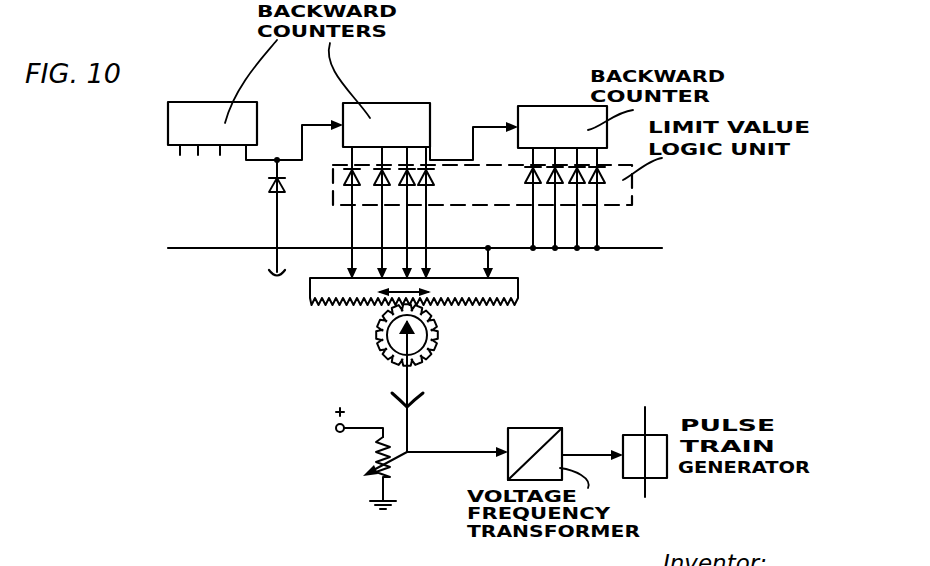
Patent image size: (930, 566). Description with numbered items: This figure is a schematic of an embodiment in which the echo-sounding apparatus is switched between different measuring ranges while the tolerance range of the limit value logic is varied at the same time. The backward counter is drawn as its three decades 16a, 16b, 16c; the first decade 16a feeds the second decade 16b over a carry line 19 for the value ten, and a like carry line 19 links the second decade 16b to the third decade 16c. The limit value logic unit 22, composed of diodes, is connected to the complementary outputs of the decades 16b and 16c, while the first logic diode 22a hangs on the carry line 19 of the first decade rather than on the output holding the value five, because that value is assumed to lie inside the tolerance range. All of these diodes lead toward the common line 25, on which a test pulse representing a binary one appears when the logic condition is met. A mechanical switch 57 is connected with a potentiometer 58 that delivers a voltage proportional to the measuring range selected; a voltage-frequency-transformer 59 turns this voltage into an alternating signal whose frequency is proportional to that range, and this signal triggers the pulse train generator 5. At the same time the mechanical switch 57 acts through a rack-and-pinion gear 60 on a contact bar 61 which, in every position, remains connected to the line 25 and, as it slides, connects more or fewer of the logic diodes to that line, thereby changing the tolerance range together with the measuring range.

The pulse train generator 5 is at (657, 458).
The decade of backward counter 16a is at (172, 128).
The decade of backward counter 16b is at (385, 118).
The decade of backward counter 16c is at (540, 120).
The carry line 19 is at (302, 140).
The limit value logic unit 22 is at (633, 187).
The diode 22a is at (272, 190).
The line 25 is at (642, 253).
The mechanical switch 57 is at (433, 342).
The potentiometer 58 is at (398, 463).
The voltage-frequency-transformer 59 is at (538, 428).
The rack-and-pinion gear 60 is at (368, 314).
The contact bar 61 is at (517, 288).